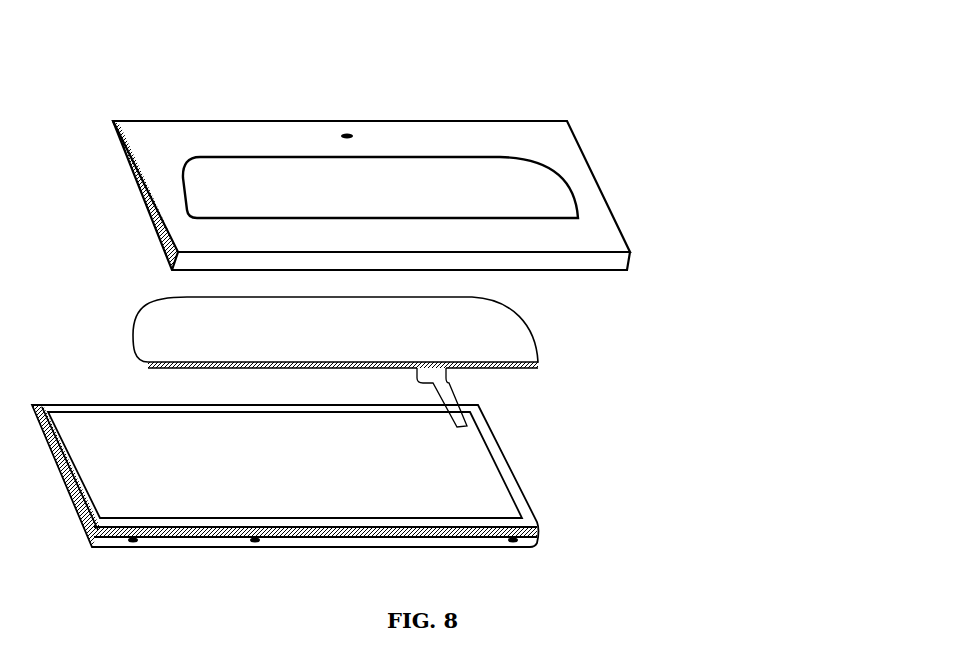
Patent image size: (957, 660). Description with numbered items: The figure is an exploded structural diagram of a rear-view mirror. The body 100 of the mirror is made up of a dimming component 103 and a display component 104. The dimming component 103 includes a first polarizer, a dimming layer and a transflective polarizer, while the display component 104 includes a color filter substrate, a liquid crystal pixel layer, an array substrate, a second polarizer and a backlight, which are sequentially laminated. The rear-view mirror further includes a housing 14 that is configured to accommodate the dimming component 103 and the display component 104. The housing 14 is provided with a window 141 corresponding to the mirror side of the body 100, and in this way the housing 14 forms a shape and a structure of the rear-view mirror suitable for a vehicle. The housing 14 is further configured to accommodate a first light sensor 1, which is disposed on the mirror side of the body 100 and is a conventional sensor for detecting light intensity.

The first light sensor 1 is at (350, 122).
The housing 14 is at (595, 228).
The window 141 is at (452, 192).
The body 100 is at (712, 300).
The dimming component 103 is at (523, 355).
The display component 104 is at (508, 497).